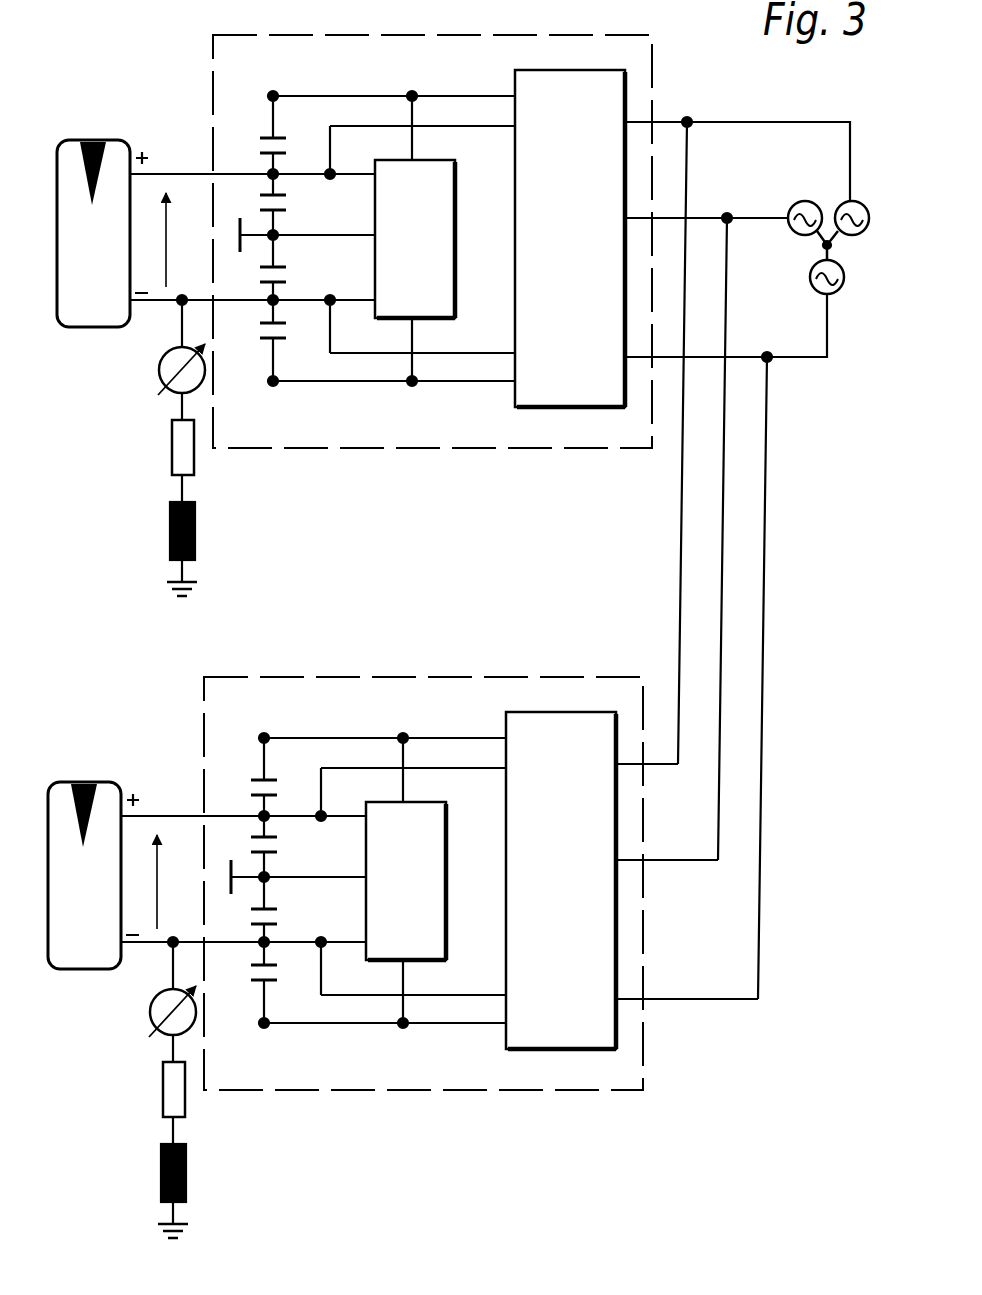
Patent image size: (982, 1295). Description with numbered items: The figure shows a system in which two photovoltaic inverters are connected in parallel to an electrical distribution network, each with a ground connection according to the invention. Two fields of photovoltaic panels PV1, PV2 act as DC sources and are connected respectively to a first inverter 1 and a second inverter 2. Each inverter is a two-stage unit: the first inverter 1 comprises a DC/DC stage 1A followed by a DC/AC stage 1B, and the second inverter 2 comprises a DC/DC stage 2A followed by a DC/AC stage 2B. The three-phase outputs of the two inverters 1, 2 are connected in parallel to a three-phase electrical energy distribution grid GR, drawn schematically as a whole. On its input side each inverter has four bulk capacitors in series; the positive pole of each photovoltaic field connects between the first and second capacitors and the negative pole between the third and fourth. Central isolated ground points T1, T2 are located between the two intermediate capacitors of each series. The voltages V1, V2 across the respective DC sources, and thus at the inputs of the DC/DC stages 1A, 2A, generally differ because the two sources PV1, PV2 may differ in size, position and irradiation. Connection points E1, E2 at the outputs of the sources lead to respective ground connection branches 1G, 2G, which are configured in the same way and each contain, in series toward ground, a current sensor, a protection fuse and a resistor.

The first inverter 1 is at (657, 99).
The DC/DC stage 1A is at (463, 203).
The DC/AC stage 1B is at (511, 268).
The ground connection branch 1G is at (177, 450).
The central isolated ground point T1 is at (307, 234).
The connection point E1 is at (189, 289).
The voltage V1 is at (179, 240).
The field of photovoltaic panels PV1 is at (93, 233).
The three-phase electrical energy distribution grid GR is at (868, 205).
The second inverter 2 is at (423, 853).
The DC/DC stage 2A is at (432, 871).
The DC/AC stage 2B is at (536, 880).
The ground connection branch 2G is at (166, 1092).
The central isolated ground point T2 is at (298, 876).
The connection point E2 is at (180, 931).
The voltage V2 is at (170, 882).
The field of photovoltaic panels PV2 is at (84, 875).